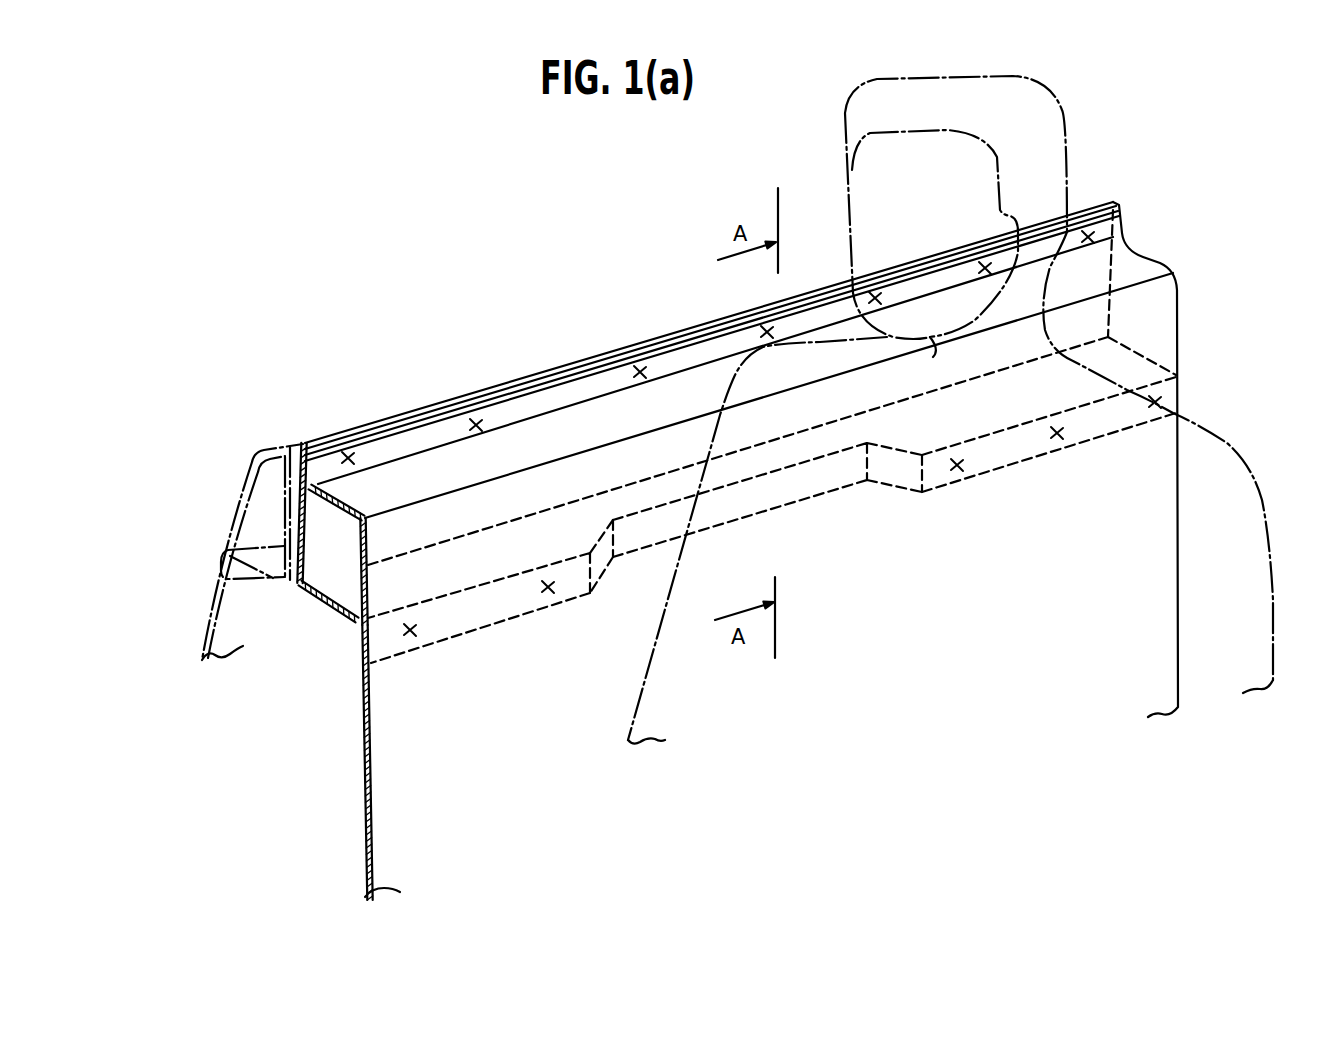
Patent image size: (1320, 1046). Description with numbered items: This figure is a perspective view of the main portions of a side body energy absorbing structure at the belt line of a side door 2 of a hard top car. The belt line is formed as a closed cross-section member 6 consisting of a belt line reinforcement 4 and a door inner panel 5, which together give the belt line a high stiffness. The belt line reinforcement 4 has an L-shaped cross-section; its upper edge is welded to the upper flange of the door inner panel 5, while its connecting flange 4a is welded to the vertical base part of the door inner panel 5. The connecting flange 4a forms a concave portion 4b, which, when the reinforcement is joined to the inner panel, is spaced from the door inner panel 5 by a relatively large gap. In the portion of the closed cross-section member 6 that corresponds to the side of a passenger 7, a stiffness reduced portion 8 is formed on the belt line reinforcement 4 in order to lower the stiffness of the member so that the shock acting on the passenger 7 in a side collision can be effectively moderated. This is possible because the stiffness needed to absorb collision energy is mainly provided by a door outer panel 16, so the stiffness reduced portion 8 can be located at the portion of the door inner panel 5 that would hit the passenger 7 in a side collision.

The side door 2 is at (538, 352).
The belt line reinforcement 4 is at (300, 583).
The connecting flange 4a is at (1023, 453).
The concave portion 4b is at (817, 483).
The door inner panel 5 is at (408, 790).
The closed cross-section member 6 is at (326, 527).
The passenger 7 is at (1086, 136).
The stiffness reduced portion 8 is at (652, 567).
The door outer panel 16 is at (238, 489).